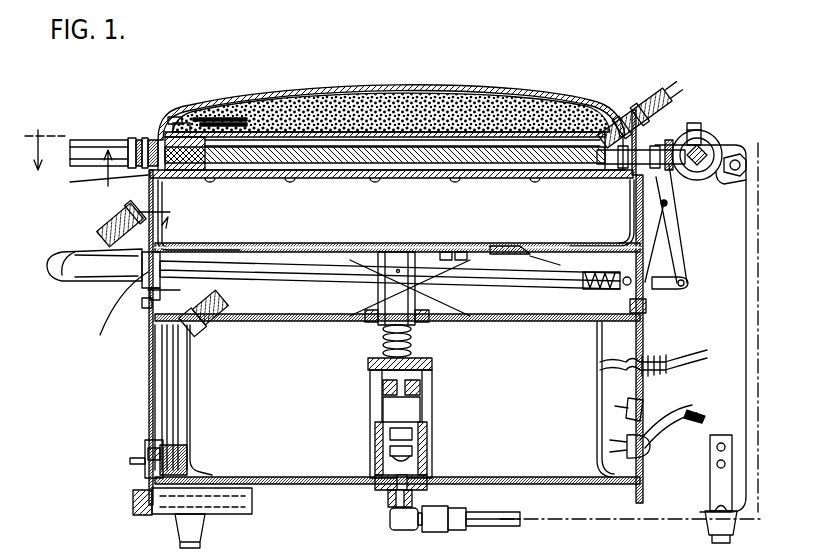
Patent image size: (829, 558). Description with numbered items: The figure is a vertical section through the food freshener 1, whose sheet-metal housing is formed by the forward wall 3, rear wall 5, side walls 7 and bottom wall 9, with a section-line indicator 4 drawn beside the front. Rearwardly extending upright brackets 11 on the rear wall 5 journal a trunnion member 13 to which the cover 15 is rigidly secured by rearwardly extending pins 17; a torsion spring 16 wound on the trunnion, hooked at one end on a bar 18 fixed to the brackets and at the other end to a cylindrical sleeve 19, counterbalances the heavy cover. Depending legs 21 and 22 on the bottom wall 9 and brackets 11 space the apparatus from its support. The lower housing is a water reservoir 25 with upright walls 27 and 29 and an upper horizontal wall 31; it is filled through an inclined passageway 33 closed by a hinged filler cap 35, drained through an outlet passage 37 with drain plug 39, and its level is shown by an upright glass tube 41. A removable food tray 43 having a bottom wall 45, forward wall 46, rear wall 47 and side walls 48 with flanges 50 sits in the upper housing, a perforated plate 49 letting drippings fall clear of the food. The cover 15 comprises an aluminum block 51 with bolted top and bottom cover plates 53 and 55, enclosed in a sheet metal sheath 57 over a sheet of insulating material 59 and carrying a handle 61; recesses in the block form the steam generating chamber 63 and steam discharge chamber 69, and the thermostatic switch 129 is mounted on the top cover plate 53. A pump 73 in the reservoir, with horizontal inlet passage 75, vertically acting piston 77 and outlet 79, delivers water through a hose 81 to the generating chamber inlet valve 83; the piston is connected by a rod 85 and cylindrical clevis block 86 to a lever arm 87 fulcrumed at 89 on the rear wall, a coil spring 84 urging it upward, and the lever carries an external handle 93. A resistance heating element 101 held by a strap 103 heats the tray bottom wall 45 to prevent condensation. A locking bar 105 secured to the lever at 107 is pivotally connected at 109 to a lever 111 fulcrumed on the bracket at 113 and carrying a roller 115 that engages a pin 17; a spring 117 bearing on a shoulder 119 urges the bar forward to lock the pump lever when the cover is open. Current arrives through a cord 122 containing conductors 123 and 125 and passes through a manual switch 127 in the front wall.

The food freshener 1 is at (142, 389).
The forward wall 3 is at (100, 325).
The section line 4 is at (45, 143).
The rear wall 5 is at (665, 337).
The side walls 7 is at (273, 306).
The bottom wall 9 is at (505, 486).
The upright brackets 11 is at (733, 315).
The trunnion member 13 is at (718, 188).
The cover 15 is at (554, 85).
The torsion spring 16 is at (726, 172).
The pins 17 is at (678, 140).
The bar 18 is at (757, 178).
The cylindrical sleeve 19 is at (712, 134).
The legs 21 is at (215, 520).
The legs 22 is at (708, 496).
The water reservoir 25 is at (488, 377).
The upright wall 27 is at (191, 388).
The upright wall 29 is at (599, 366).
The upper horizontal wall 31 is at (496, 321).
The inclined passageway 33 is at (208, 336).
The hinged filler cap 35 is at (110, 230).
The outlet passage 37 is at (260, 500).
The drain plug 39 is at (152, 525).
The upright glass tube 41 is at (168, 423).
The removable food tray 43 is at (170, 222).
The bottom wall 45 is at (358, 244).
The forward wall 46 is at (165, 197).
The rear wall 47 is at (630, 215).
The side walls 48 is at (482, 214).
The plate 49 is at (306, 243).
The flanges 50 is at (85, 184).
The rectangular block 51 is at (166, 128).
The top cover plate 53 is at (296, 132).
The bottom cover plate 55 is at (276, 178).
The sheet metal sheath 57 is at (408, 84).
The sheet of insulating material 59 is at (391, 112).
The handle 61 is at (100, 145).
The steam generating chamber 63 is at (356, 144).
The steam discharge chamber 69 is at (425, 180).
The pump 73 is at (369, 398).
The horizontal inlet passage 75 is at (385, 446).
The vertically acting piston 77 is at (425, 405).
The outlet 79 is at (428, 470).
The hose 81 is at (480, 528).
The generating chamber inlet valve 83 is at (645, 95).
The coil spring 84 is at (380, 340).
The rod 85 is at (420, 358).
The cylindrical clevis block 86 is at (376, 298).
The lever arm 87 is at (300, 278).
The fulcrum 89 is at (643, 300).
The handle 93 is at (58, 276).
The resistance heating element 101 is at (525, 262).
The strap 103 is at (560, 285).
The locking bar 105 is at (470, 282).
The screw connection 107 is at (96, 316).
The pivotal connection 109 is at (686, 284).
The lever 111 is at (674, 230).
The fulcrum 113 is at (666, 203).
The roller 115 is at (705, 124).
The spring 117 is at (590, 250).
The shoulder 119 is at (540, 246).
The cord 122 is at (652, 447).
The conductor 123 is at (690, 407).
The conductor 125 is at (722, 422).
The manual switch 127 is at (141, 467).
The thermostatic switch 129 is at (226, 116).